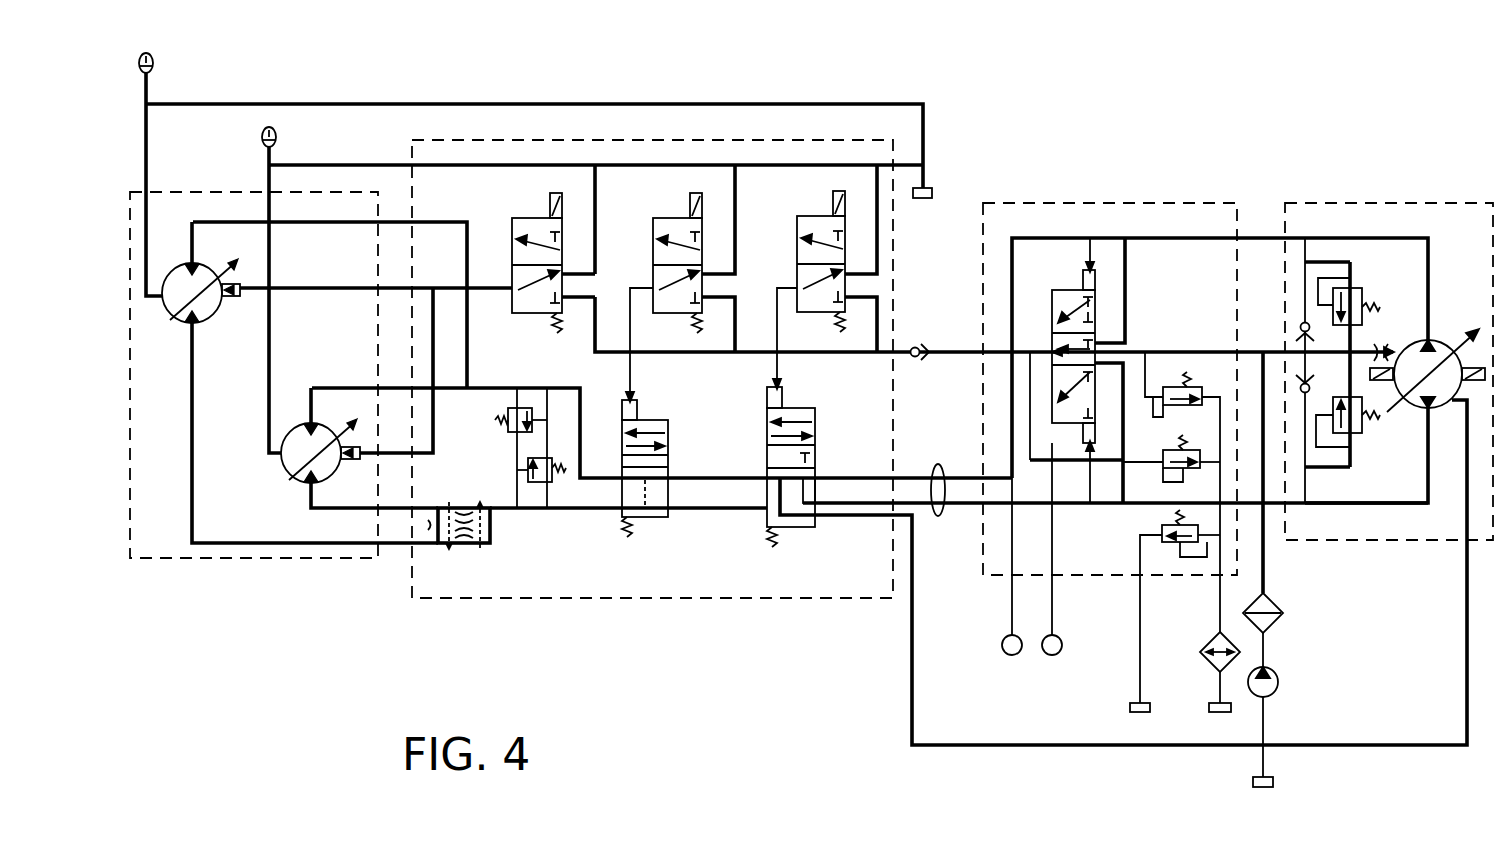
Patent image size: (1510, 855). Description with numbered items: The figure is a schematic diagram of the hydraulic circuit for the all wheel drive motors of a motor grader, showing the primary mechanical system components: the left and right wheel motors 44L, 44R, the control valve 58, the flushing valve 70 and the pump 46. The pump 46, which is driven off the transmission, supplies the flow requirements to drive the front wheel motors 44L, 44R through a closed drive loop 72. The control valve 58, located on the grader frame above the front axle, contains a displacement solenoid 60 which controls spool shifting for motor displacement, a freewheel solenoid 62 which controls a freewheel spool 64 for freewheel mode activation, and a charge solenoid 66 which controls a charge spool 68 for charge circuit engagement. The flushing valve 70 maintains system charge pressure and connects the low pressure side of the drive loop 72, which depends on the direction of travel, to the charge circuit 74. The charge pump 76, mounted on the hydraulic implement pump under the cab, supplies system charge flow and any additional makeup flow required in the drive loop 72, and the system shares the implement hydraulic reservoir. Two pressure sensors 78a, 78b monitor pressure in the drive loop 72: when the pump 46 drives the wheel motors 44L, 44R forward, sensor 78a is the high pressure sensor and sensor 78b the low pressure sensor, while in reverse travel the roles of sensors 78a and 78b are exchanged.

The right wheel motor 44R is at (172, 322).
The left wheel motor 44L is at (296, 480).
The pump 46 is at (1418, 202).
The control valve 58 is at (790, 598).
The displacement solenoid 60 is at (524, 218).
The freewheel solenoid 62 is at (665, 218).
The freewheel spool 64 is at (652, 518).
The charge solenoid 66 is at (812, 216).
The charge spool 68 is at (802, 528).
The flushing valve 70 is at (1140, 203).
The drive loop 72 is at (940, 464).
The charge circuit 74 is at (1302, 599).
The charge pump 76 is at (1279, 683).
The pressure sensor 78a is at (1004, 652).
The pressure sensor 78b is at (1058, 655).